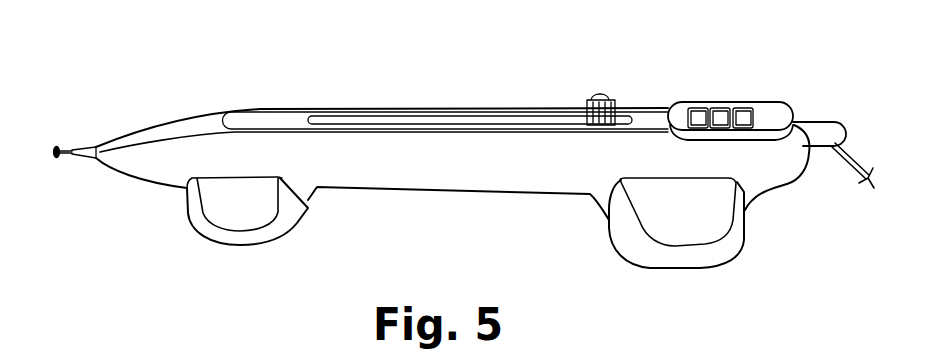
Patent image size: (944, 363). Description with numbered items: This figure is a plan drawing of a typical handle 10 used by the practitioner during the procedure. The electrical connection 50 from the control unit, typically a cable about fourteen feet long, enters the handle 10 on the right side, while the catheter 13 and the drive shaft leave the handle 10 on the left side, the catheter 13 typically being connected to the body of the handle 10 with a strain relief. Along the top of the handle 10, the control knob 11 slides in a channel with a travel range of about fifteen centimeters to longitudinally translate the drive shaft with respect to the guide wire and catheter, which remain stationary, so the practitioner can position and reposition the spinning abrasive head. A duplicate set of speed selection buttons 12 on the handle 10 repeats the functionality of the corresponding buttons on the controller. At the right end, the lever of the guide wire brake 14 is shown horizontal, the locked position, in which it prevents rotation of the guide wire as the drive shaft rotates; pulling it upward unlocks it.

The handle 10 is at (650, 115).
The control knob 11 is at (600, 97).
The speed selection buttons 12 is at (760, 117).
The catheter 13 is at (66, 148).
The guide wire brake 14 is at (818, 127).
The electrical connection 50 is at (843, 163).